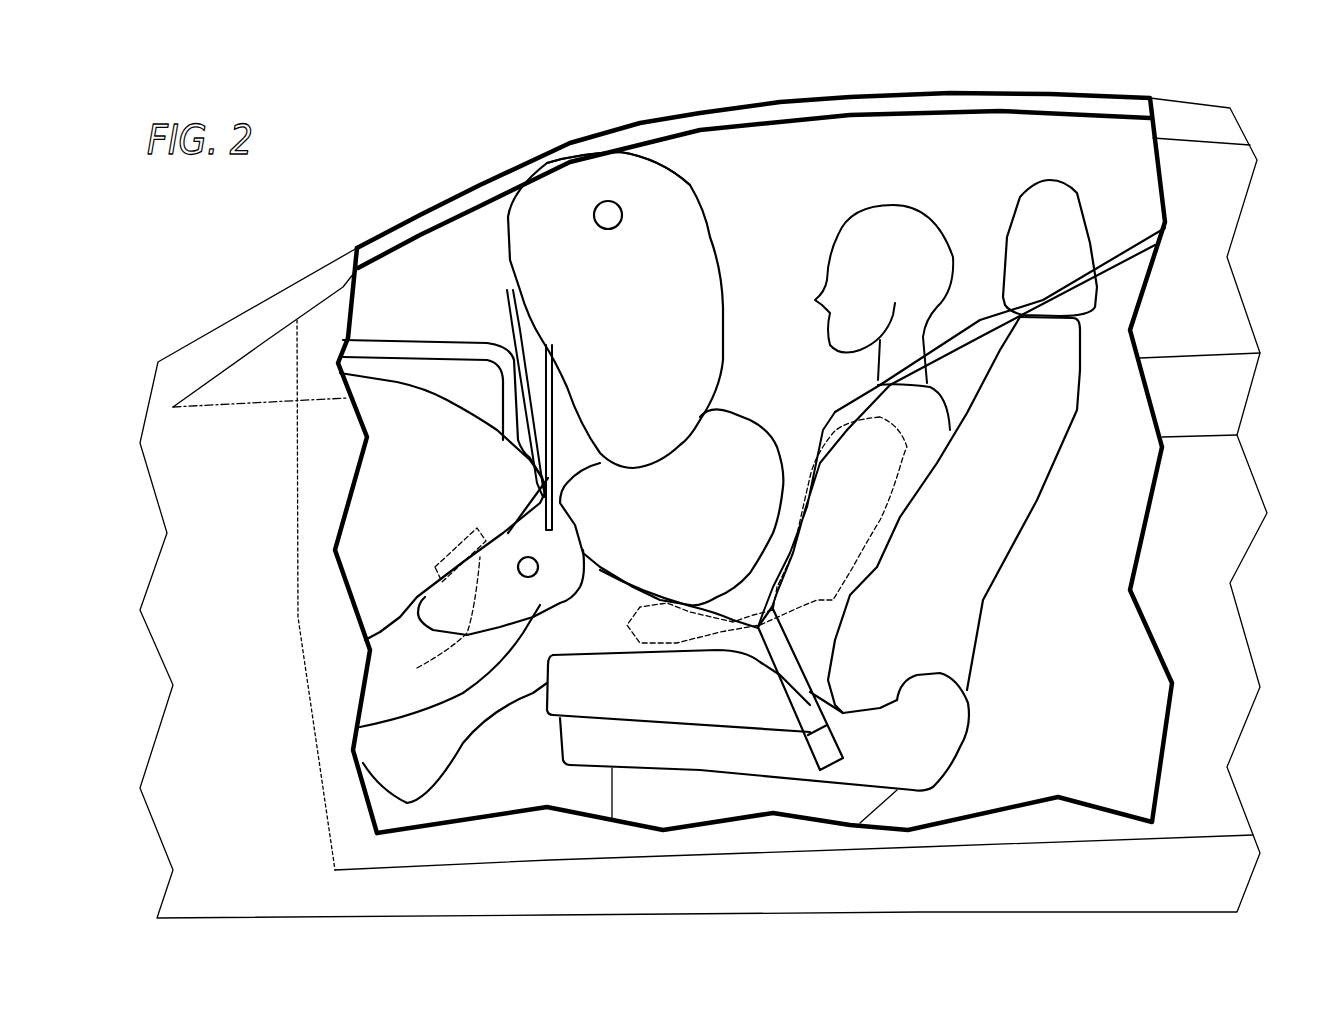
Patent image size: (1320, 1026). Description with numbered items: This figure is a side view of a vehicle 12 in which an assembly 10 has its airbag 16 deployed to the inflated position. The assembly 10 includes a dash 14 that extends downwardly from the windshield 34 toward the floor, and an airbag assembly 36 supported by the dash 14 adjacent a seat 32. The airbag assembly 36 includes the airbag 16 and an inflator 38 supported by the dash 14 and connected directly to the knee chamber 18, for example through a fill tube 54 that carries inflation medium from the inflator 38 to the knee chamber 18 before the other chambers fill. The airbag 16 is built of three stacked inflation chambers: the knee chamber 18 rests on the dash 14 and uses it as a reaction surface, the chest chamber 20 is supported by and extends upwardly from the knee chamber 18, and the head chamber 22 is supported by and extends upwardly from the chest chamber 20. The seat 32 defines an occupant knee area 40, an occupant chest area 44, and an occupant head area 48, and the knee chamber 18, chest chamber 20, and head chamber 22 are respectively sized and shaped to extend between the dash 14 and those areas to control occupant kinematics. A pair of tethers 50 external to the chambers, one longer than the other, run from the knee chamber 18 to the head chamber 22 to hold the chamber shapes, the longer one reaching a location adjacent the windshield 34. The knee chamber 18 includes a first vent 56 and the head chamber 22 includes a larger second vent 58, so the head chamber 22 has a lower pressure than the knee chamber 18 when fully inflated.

The assembly 10 is at (890, 160).
The vehicle 12 is at (1030, 52).
The dash 14 is at (380, 482).
The airbag 16 is at (713, 247).
The knee chamber 18 is at (537, 607).
The chest chamber 20 is at (735, 440).
The head chamber 22 is at (670, 217).
The seat 32 is at (947, 600).
The windshield 34 is at (545, 160).
The airbag assembly 36 is at (690, 162).
The inflator 38 is at (457, 543).
The occupant knee area 40 is at (521, 650).
The occupant chest area 44 is at (798, 463).
The occupant head area 48 is at (808, 235).
The tethers 50 is at (507, 293).
The fill tube 54 is at (431, 621).
The first vent 56 is at (540, 565).
The second vent 58 is at (608, 200).